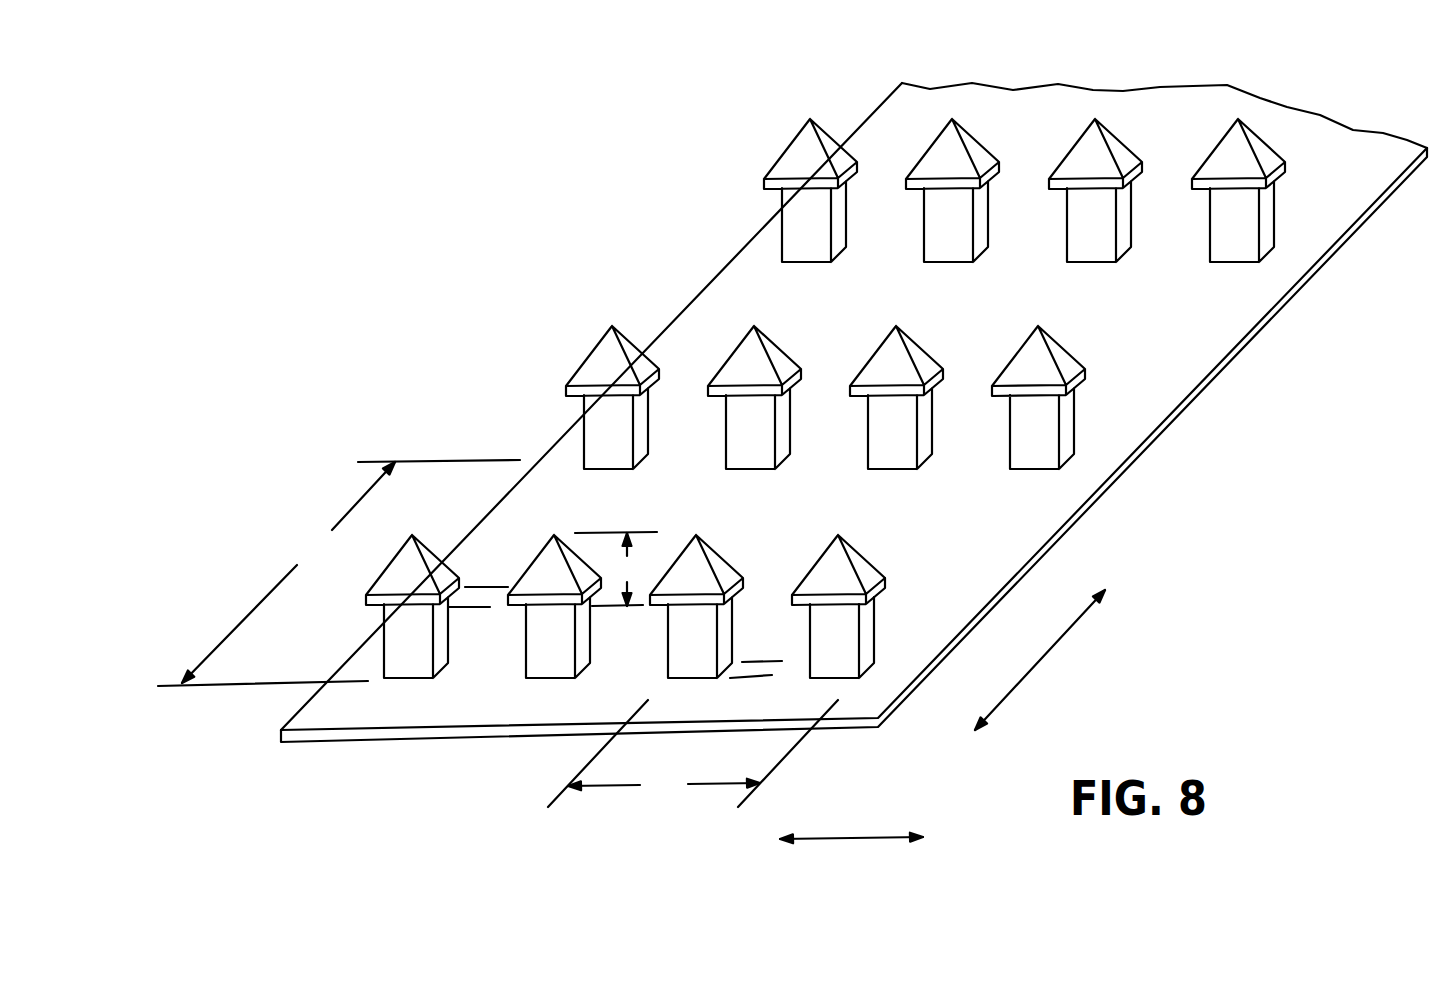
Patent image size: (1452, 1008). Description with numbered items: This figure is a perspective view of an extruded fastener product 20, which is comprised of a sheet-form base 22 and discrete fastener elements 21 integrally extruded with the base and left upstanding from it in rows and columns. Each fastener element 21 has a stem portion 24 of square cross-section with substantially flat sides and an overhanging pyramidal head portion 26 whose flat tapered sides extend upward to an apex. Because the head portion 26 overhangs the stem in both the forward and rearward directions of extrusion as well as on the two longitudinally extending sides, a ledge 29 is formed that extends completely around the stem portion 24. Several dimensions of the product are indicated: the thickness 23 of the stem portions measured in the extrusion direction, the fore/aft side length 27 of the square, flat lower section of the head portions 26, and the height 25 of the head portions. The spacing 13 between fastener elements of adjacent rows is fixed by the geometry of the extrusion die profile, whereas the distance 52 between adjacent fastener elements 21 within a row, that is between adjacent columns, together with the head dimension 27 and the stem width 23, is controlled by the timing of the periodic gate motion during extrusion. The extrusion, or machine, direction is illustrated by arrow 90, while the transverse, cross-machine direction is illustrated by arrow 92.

The fastener product 20 is at (1137, 372).
The sheet-form base 22 is at (1137, 453).
The fastener elements 21 is at (523, 645).
The stem portion 24 is at (868, 650).
The head portion 26 is at (852, 552).
The ledge 29 is at (884, 582).
The thickness of stem portions 23 is at (760, 678).
The side length of head portion 27 is at (477, 612).
The height of head portions 25 is at (616, 569).
The spacing of fastener elements between adjacent rows 13 is at (693, 753).
The distance between adjacent fastener elements within a row 52 is at (339, 573).
The arrow indicating extrusion direction 90 is at (1047, 653).
The arrow indicating transverse direction 92 is at (852, 843).